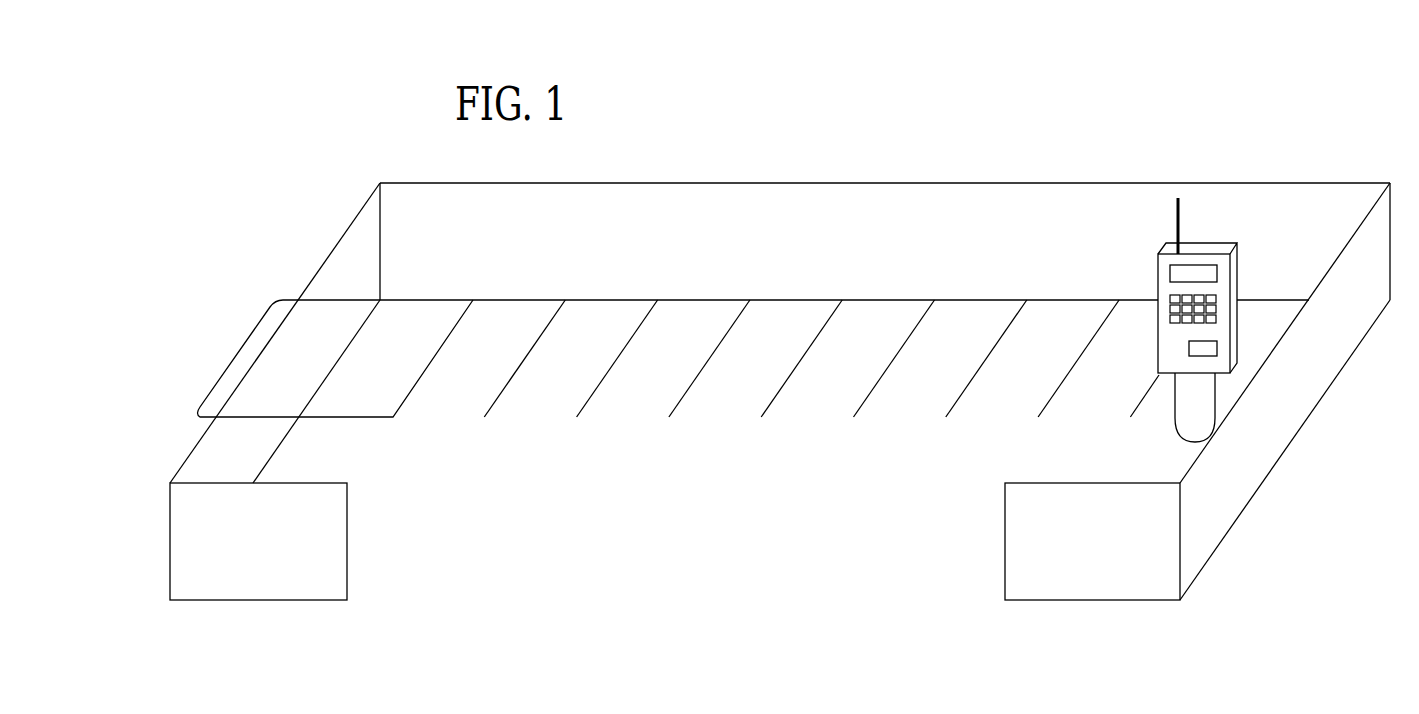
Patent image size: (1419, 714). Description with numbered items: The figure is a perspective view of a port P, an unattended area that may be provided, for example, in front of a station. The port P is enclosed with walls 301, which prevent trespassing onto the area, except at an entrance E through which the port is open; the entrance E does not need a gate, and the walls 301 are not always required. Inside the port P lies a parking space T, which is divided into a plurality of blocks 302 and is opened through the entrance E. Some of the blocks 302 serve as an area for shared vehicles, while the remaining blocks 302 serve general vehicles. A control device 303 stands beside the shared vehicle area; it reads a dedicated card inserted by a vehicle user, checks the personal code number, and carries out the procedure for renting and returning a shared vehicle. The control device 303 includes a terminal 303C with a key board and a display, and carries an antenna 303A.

The port P is at (1185, 105).
The entrance E is at (682, 580).
The parking space T is at (238, 353).
The walls 301 is at (747, 240).
The blocks 302 is at (910, 347).
The control device 303 is at (1238, 278).
The antenna 303A is at (1176, 217).
The terminal 303C is at (1170, 310).